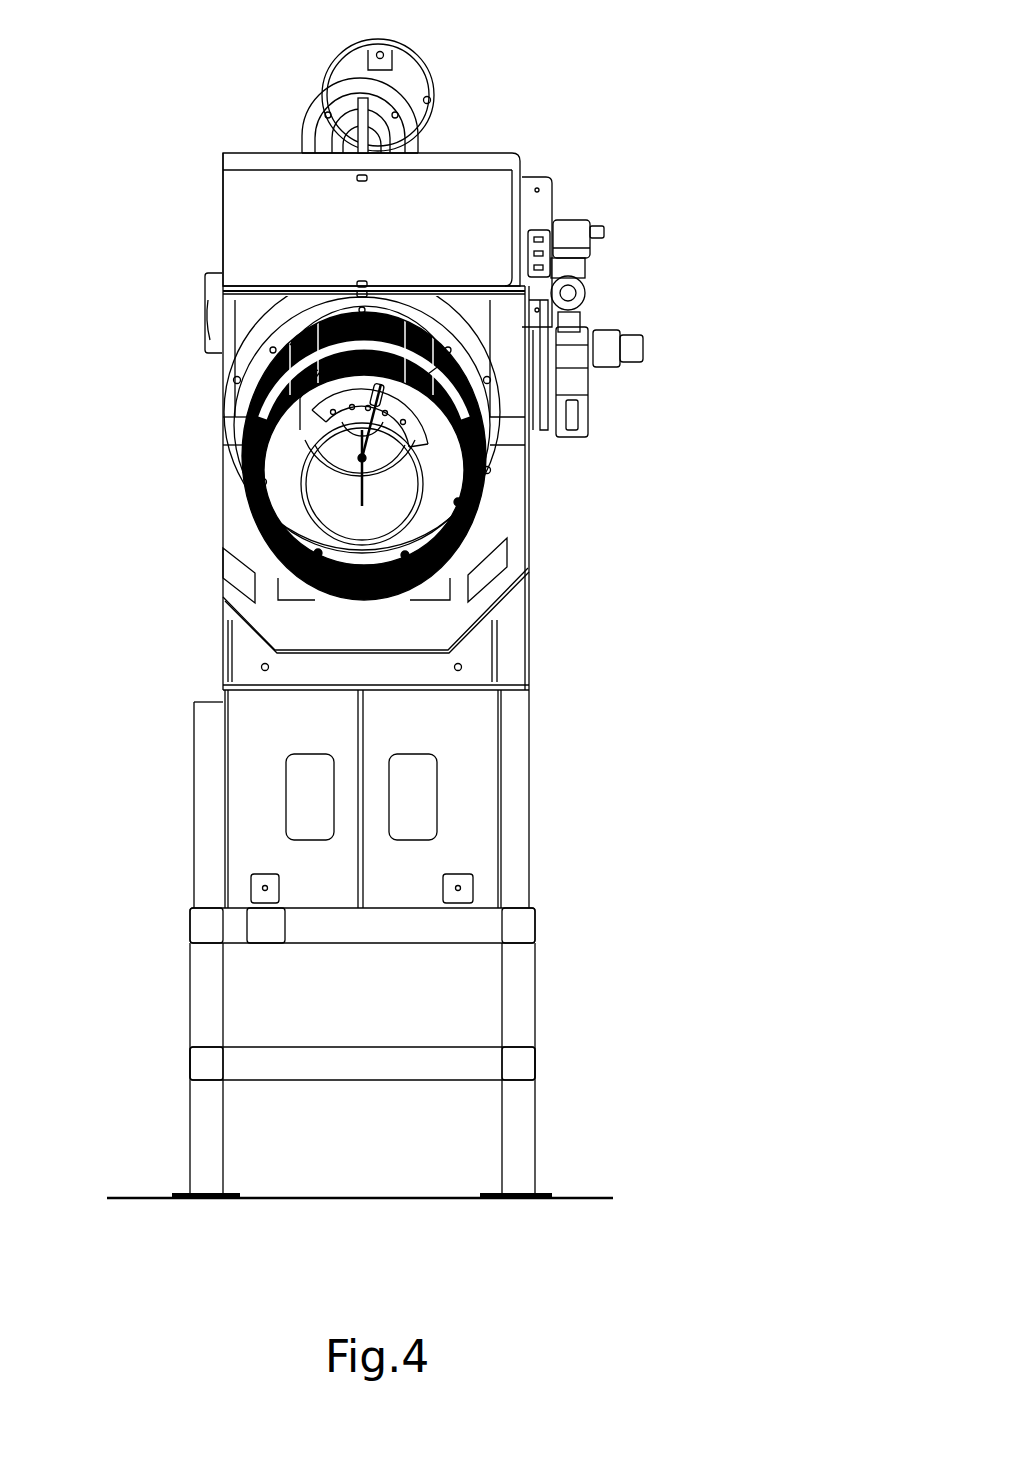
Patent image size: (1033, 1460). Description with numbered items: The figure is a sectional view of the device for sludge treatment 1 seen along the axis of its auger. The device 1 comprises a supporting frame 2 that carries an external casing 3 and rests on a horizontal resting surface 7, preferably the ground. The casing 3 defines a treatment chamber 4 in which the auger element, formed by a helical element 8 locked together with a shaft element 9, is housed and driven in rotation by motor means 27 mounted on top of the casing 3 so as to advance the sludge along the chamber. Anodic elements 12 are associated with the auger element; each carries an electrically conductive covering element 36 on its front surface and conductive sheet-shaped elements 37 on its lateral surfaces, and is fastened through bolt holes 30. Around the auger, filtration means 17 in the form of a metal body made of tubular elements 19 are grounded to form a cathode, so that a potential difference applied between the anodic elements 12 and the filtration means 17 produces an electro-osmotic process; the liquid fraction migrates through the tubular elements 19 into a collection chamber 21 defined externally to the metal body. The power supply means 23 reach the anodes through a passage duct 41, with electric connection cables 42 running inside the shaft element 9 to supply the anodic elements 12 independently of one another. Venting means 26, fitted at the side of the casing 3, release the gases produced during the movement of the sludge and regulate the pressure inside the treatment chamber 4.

The device for sludge treatment 1 is at (730, 57).
The supporting frame 2 is at (188, 1005).
The external casing 3 is at (505, 135).
The treatment chamber 4 is at (262, 422).
The horizontal resting surface 7 is at (583, 1197).
The helical element 8 is at (473, 523).
The shaft element 9 is at (306, 437).
The anodic element 12 is at (293, 342).
The filtration means 17 is at (243, 503).
The tubular element 19 is at (425, 600).
The collection chamber 21 is at (335, 624).
The power supply means 23 is at (358, 503).
The venting means 26 is at (602, 310).
The motor means 27 is at (433, 50).
The bolt holes 30 is at (404, 447).
The covering element 36 is at (400, 374).
The sheet-shaped element 37 is at (397, 405).
The passage duct 41 is at (330, 320).
The electric connection cable 42 is at (385, 478).